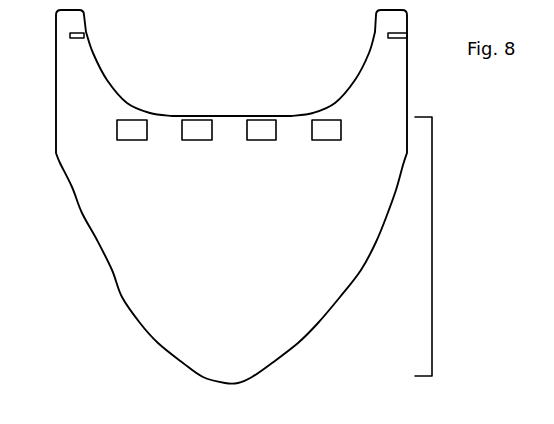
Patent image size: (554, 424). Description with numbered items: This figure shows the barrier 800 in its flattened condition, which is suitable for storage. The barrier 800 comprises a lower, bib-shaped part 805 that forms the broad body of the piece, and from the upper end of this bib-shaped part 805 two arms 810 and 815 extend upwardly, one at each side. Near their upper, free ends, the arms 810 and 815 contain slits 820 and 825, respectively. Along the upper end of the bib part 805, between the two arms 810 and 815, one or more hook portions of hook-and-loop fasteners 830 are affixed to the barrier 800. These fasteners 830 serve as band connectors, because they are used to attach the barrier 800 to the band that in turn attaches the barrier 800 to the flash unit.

The barrier 800 is at (452, 103).
The bib-shaped part 805 is at (432, 263).
The arm 810 is at (86, 18).
The arm 815 is at (376, 20).
The slit 820 is at (85, 36).
The slit 825 is at (388, 36).
The hook portions of H&L fasteners 830 is at (327, 121).